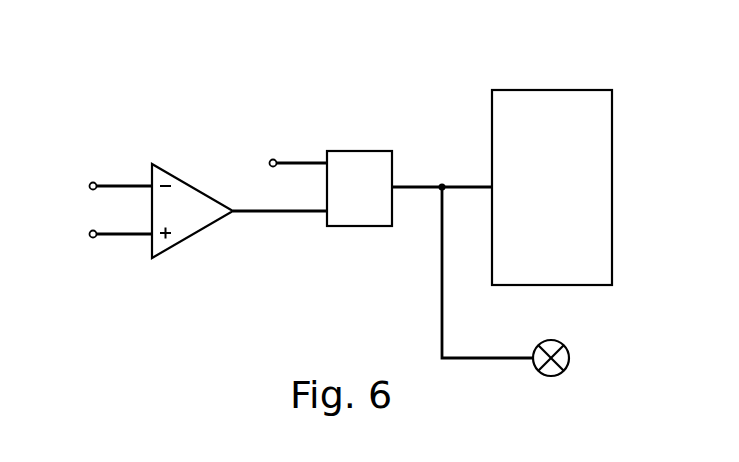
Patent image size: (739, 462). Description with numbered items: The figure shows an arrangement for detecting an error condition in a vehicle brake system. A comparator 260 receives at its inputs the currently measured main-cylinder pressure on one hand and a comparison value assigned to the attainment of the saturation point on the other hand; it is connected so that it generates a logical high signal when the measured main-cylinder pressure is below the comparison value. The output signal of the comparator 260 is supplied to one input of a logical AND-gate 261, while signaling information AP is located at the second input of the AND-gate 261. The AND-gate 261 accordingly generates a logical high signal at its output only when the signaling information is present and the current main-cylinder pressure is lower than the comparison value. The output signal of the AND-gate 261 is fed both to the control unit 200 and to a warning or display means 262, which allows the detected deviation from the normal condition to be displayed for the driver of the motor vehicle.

The control unit 200 is at (557, 90).
The comparator 260 is at (193, 232).
The logical AND-gate 261 is at (358, 152).
The warning or display means 262 is at (569, 361).